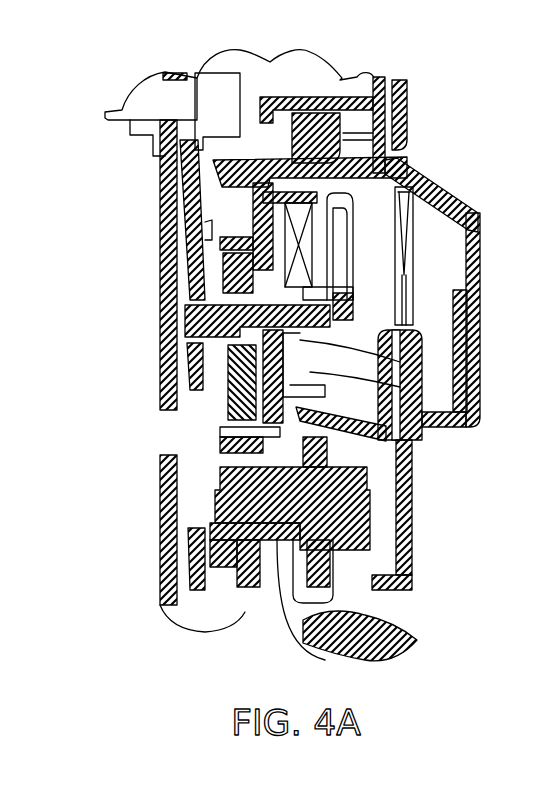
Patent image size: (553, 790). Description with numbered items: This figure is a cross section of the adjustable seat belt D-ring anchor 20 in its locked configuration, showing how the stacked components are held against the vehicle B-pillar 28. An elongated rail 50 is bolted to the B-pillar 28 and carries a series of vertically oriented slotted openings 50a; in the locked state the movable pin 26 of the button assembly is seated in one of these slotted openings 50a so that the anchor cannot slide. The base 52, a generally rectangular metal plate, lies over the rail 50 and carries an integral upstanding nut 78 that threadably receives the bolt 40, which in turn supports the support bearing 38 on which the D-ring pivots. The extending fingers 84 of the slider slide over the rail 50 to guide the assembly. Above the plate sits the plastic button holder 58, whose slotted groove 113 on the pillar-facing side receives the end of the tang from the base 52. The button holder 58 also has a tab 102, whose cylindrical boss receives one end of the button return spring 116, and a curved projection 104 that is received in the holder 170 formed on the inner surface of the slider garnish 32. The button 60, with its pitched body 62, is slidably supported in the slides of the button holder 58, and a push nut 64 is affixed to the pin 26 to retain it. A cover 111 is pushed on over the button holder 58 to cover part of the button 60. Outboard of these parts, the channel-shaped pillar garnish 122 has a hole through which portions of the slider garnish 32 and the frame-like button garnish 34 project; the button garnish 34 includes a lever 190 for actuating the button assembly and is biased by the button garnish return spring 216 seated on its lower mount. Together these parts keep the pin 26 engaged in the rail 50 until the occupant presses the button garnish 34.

The D-ring anchor 20 is at (145, 427).
The pin 26 is at (185, 325).
The B-pillar 28 is at (170, 256).
The slider garnish 32 is at (477, 263).
The button garnish 34 is at (457, 428).
The support bearing 38 is at (395, 522).
The bolt 40 is at (227, 503).
The rail 50 is at (250, 203).
The slotted openings 50a is at (188, 517).
The base 52 is at (222, 407).
The button holder 58 is at (247, 180).
The button 60 is at (327, 390).
The pitched body 62 is at (410, 405).
The push nut 64 is at (300, 343).
The nut 78 is at (277, 633).
The fingers 84 is at (207, 230).
The tab 102 is at (333, 203).
The curved projection 104 is at (401, 97).
The cover 111 is at (313, 247).
The slotted groove 113 is at (193, 212).
The button return spring 116 is at (410, 160).
The pillar garnish 122 is at (400, 95).
The holder 170 is at (330, 112).
The lever 190 is at (405, 495).
The button garnish return spring 216 is at (420, 290).